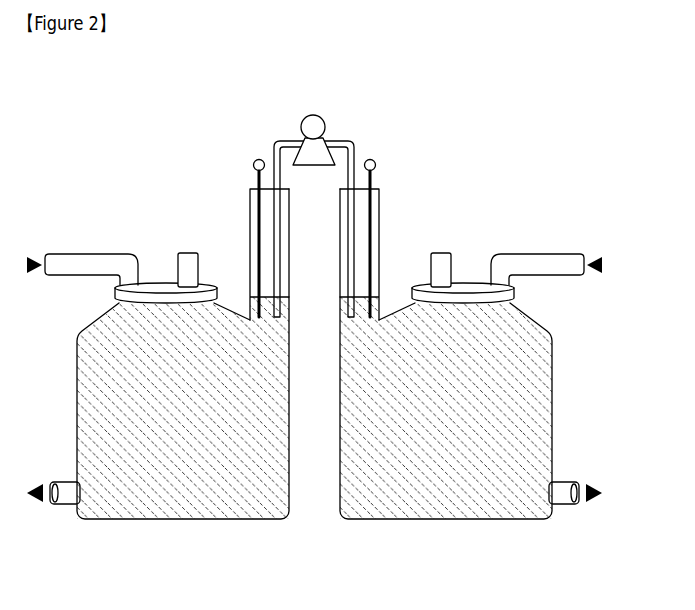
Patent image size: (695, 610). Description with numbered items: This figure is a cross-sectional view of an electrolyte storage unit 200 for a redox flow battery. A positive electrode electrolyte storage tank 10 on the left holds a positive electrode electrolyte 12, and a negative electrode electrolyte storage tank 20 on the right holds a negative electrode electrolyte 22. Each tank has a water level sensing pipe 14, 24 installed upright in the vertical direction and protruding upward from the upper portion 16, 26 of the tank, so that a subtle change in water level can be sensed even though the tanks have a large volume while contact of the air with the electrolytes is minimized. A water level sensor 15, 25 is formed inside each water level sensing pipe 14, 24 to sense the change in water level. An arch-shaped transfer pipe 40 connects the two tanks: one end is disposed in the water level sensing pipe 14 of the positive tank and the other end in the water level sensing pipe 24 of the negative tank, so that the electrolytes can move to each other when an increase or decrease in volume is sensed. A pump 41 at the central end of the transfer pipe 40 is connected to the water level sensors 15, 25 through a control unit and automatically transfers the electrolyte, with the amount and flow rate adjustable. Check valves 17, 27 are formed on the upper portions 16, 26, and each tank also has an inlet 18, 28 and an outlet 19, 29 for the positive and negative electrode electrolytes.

The positive electrode electrolyte storage tank 10 is at (172, 521).
The positive electrode electrolyte 12 is at (103, 402).
The water level sensing pipe 14 is at (249, 212).
The water level sensor 15 is at (257, 159).
The upper portion of electrolyte storage tank 16 is at (117, 291).
The check valve 17 is at (186, 252).
The inlet of positive electrode electrolyte 18 is at (80, 253).
The outlet of positive electrode electrolyte 19 is at (62, 506).
The negative electrode electrolyte storage tank 20 is at (454, 521).
The negative electrode electrolyte 22 is at (530, 400).
The water level sensing pipe 24 is at (380, 212).
The water level sensor 25 is at (371, 159).
The upper portion of electrolyte storage tank 26 is at (516, 291).
The check valve 27 is at (434, 252).
The inlet of negative electrode electrolyte 28 is at (550, 253).
The outlet of negative electrode electrolyte 29 is at (566, 506).
The transfer pipe 40 is at (337, 142).
The pump 41 is at (313, 114).
The electrolyte storage unit 200 is at (333, 597).